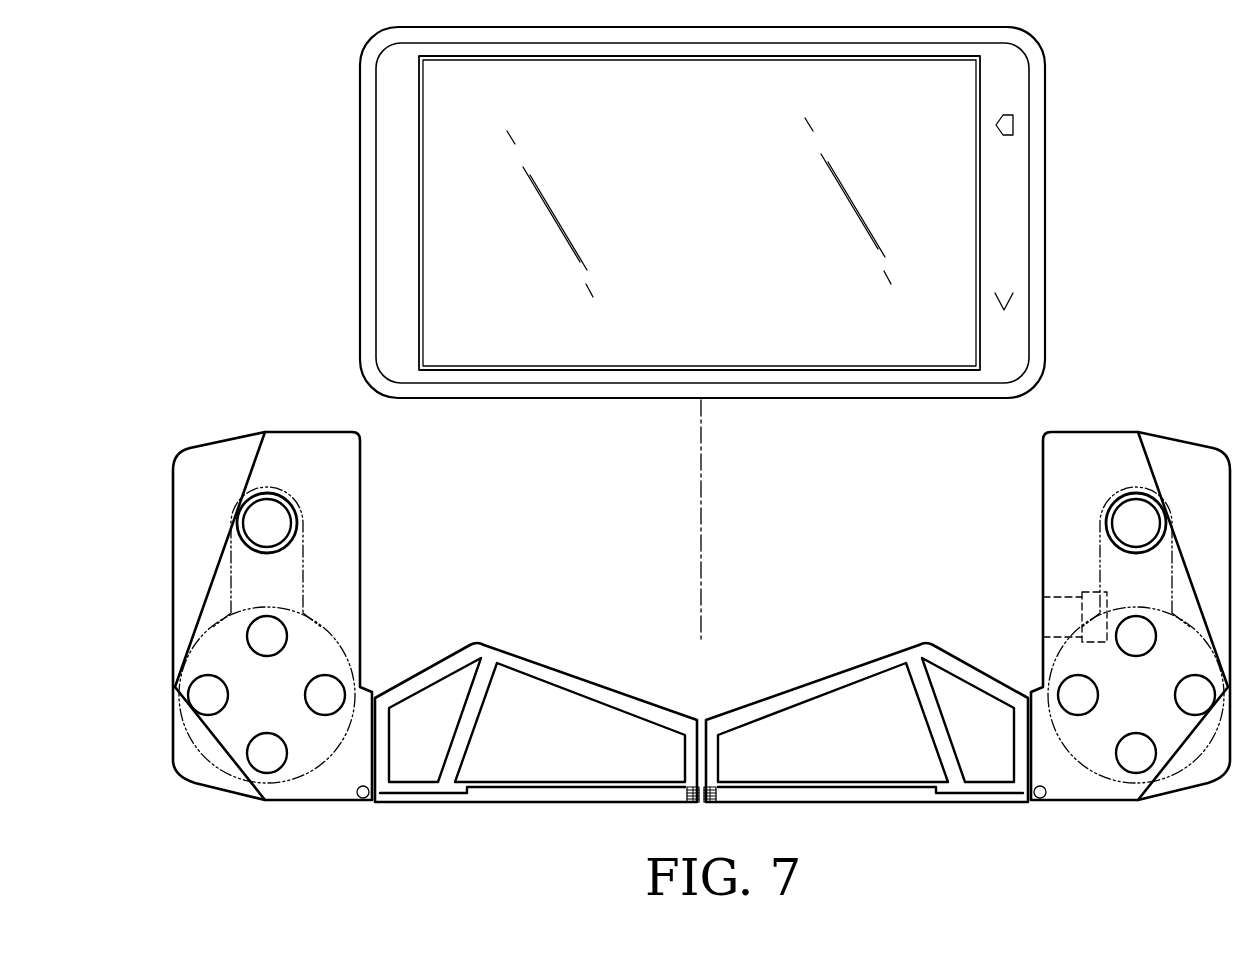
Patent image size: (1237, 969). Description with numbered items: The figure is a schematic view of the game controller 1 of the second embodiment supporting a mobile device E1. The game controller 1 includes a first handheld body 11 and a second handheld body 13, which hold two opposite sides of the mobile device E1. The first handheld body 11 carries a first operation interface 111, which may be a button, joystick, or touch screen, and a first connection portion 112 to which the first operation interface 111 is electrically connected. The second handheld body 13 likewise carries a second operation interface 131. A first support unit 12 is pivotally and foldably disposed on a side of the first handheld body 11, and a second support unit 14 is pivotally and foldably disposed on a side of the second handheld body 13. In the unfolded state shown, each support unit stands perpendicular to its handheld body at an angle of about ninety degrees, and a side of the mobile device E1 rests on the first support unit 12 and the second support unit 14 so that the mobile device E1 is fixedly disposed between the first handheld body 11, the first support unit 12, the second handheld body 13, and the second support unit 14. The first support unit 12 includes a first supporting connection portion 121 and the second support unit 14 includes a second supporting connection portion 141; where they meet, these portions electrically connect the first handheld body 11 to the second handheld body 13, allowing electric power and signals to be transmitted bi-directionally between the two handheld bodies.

The game controller 1 is at (1141, 410).
The first handheld body 11 is at (1192, 467).
The first operation interface 111 is at (1100, 548).
The first connection portion 112 is at (1058, 615).
The first support unit 12 is at (896, 804).
The first supporting connection portion 121 is at (710, 786).
The second handheld body 13 is at (210, 468).
The second operation interface 131 is at (303, 547).
The second support unit 14 is at (505, 804).
The second supporting connection portion 141 is at (692, 786).
The mobile device E1 is at (1045, 213).